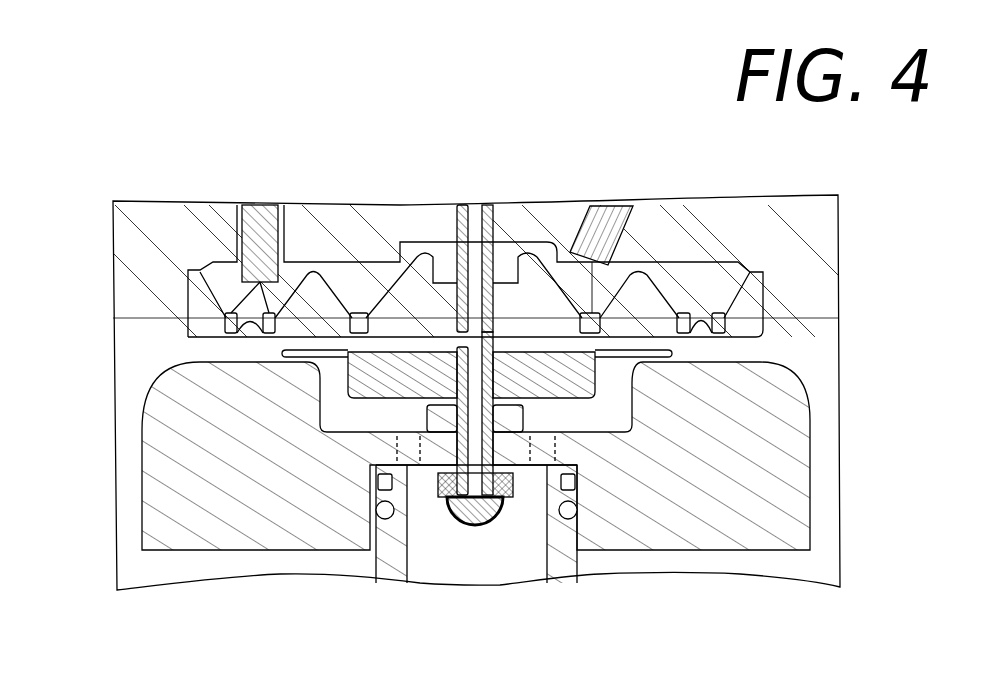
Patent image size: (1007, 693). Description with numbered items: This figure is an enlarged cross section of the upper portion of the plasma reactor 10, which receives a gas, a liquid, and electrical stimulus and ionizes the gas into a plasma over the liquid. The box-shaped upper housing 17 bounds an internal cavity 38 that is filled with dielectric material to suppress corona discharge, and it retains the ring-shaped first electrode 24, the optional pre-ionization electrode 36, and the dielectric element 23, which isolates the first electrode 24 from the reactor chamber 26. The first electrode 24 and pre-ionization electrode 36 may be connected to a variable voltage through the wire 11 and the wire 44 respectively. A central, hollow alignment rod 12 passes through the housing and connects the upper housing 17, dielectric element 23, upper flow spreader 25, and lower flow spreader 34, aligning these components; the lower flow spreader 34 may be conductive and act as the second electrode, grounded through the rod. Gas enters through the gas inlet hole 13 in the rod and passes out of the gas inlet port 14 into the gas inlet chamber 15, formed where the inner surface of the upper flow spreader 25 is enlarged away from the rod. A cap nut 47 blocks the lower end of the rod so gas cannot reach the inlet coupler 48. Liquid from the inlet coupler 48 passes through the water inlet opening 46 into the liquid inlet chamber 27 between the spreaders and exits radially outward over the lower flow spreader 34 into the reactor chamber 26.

The plasma reactor 10 is at (103, 186).
The wire 11 is at (240, 222).
The alignment rod 12 is at (450, 228).
The gas inlet hole 13 is at (474, 207).
The gas inlet port 14 is at (452, 340).
The gas inlet chamber 15 is at (498, 345).
The upper housing 17 is at (812, 326).
The dielectric element 23 is at (187, 331).
The first electrode 24 is at (224, 322).
The upper flow spreader 25 is at (608, 386).
The reactor chamber 26 is at (556, 448).
The liquid inlet chamber 27 is at (433, 418).
The lower flow spreader 34 is at (140, 430).
The pre-ionization electrode 36 is at (358, 316).
The internal cavity 38 is at (475, 293).
The wire 44 is at (632, 227).
The water inlet opening 46 is at (393, 447).
The cap nut 47 is at (471, 531).
The inlet coupler 48 is at (372, 566).